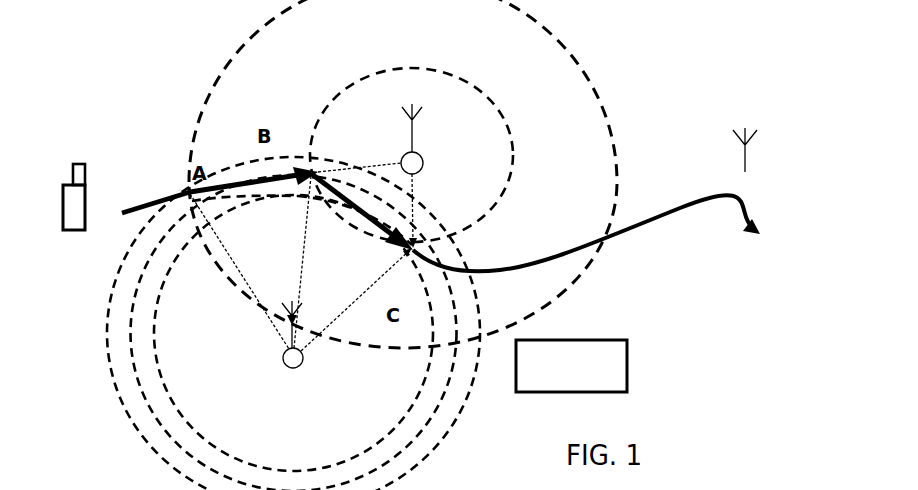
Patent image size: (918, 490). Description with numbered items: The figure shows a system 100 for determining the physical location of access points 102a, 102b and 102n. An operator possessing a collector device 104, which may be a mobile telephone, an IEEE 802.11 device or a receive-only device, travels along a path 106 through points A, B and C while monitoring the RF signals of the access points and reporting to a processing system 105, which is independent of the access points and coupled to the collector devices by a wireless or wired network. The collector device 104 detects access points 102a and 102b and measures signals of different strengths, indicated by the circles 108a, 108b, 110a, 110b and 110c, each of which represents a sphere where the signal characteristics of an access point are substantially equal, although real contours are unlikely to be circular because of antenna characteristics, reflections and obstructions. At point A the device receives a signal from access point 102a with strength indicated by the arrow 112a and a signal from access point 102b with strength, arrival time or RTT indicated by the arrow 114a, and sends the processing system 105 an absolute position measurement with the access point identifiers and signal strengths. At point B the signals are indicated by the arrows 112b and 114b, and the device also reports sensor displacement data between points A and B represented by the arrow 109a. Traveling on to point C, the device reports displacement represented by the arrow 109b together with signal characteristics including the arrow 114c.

The system 100 is at (606, 38).
The access point 102a is at (286, 349).
The access point 102b is at (413, 143).
The access point 102n is at (745, 172).
The collector device 104 is at (80, 158).
The processing system 105 is at (627, 365).
The path 106 is at (155, 190).
The circle 108a is at (189, 127).
The circle 108b is at (331, 97).
The arrow 109a is at (273, 188).
The arrow 109b is at (344, 207).
The circle 110a is at (107, 378).
The circle 110b is at (133, 300).
The circle 110c is at (160, 388).
The arrow 112a is at (297, 280).
The arrow 112b is at (339, 322).
The arrow 114a is at (222, 180).
The arrow 114b is at (364, 167).
The arrow 114c is at (416, 211).